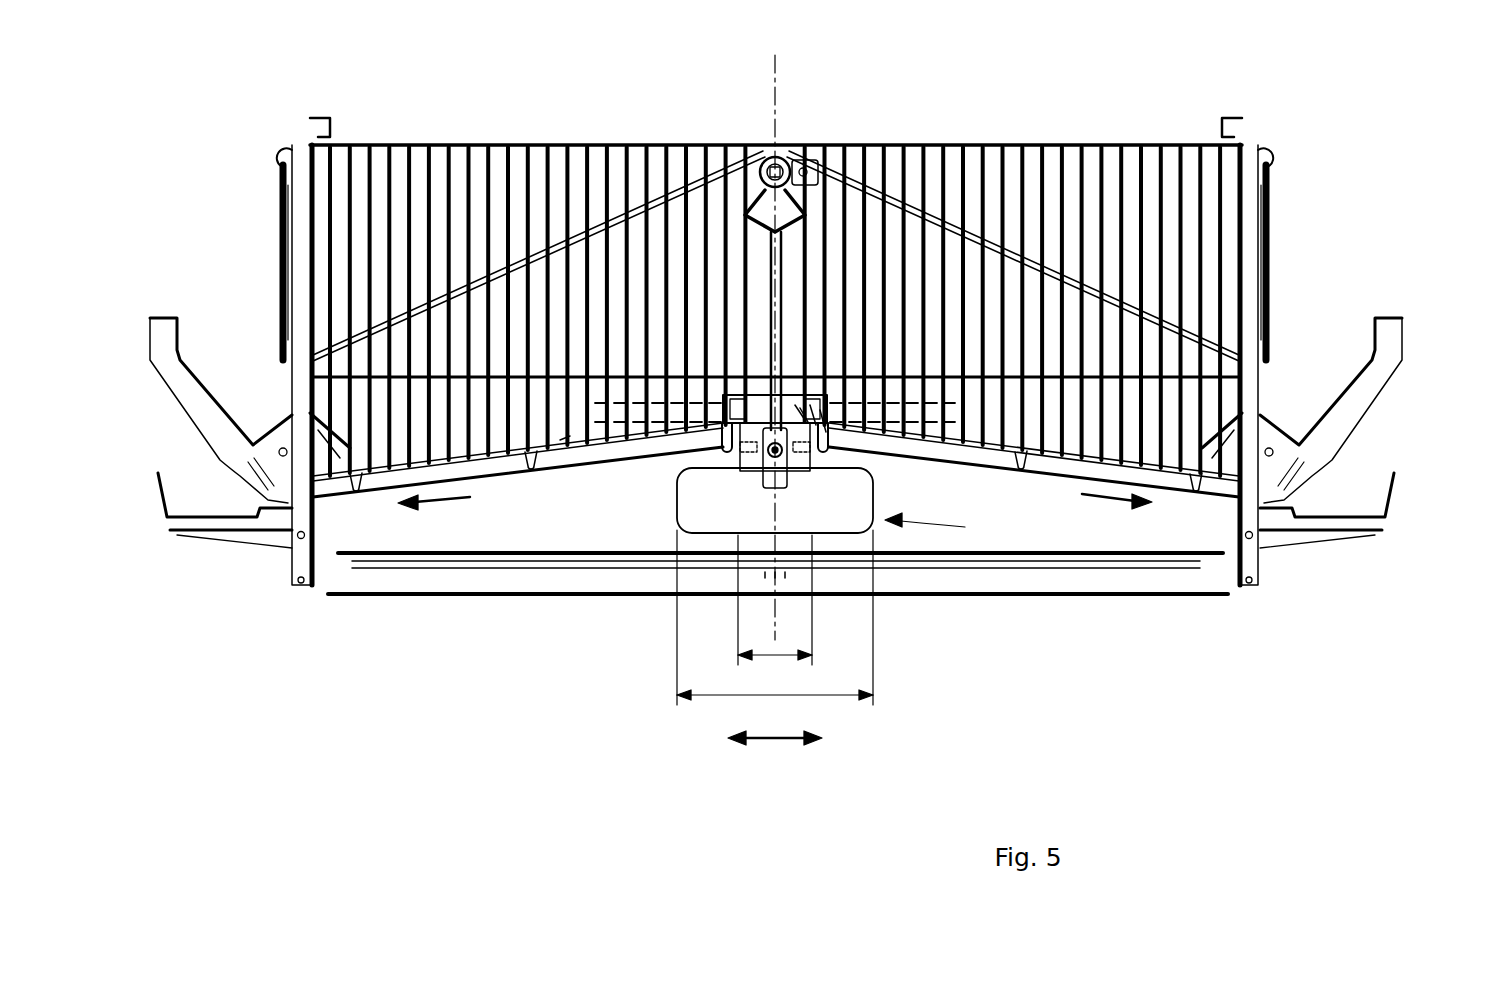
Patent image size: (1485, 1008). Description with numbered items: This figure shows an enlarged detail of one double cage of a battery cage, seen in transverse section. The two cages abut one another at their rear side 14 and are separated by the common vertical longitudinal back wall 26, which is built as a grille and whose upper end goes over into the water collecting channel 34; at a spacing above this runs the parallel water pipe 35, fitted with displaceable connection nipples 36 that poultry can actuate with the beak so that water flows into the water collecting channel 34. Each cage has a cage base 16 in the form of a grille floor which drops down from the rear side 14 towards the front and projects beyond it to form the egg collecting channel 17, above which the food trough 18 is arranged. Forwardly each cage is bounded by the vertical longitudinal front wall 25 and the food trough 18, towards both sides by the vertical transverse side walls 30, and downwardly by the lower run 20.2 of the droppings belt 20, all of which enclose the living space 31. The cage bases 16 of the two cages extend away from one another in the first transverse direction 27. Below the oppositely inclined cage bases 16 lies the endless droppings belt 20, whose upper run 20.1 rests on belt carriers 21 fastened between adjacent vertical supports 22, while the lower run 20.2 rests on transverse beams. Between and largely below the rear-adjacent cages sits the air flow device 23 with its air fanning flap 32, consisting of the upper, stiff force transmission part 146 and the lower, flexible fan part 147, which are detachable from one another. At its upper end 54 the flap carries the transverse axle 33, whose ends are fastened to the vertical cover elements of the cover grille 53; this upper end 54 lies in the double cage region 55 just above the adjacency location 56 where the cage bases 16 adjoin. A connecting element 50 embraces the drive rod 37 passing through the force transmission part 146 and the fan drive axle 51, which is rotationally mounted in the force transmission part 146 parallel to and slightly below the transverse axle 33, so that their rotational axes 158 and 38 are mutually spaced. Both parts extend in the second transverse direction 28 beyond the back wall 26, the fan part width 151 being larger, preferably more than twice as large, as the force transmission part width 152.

The rear side 14 is at (795, 405).
The cage base 16 is at (500, 472).
The egg collecting channel 17 is at (158, 490).
The food trough 18 is at (150, 335).
The droppings belt 20 is at (960, 612).
The upper run 20.1 is at (1002, 570).
The lower run 20.2 is at (1073, 596).
The belt carrier 21 is at (1012, 556).
The vertical support 22 is at (300, 215).
The air flow device 23 is at (941, 527).
The longitudinal front wall 25 is at (283, 262).
The longitudinal back wall 26 is at (757, 400).
The first transverse direction 27 is at (442, 505).
The second transverse direction 28 is at (778, 742).
The transverse side wall 30 is at (582, 145).
The living space 31 is at (516, 172).
The air fanning flap 32 is at (694, 520).
The transverse axle 33 is at (815, 425).
The water collecting channel 34 is at (760, 160).
The water pipe 35 is at (797, 160).
The connection nipple 36 is at (790, 395).
The drive rod 37 is at (800, 470).
The rotational axis 38 is at (560, 452).
The connecting element 50 is at (722, 440).
The fan drive axle 51 is at (835, 452).
The cover grille 53 is at (826, 432).
The upper end of the air fanning flap 54 is at (745, 400).
The double cage region 55 is at (805, 420).
The adjacency location 56 is at (804, 415).
The force transmission part 146 is at (755, 457).
The fan part 147 is at (797, 425).
The fan part width 151 is at (778, 696).
The force transmission part width 152 is at (780, 656).
The rotational axis 158 is at (606, 457).